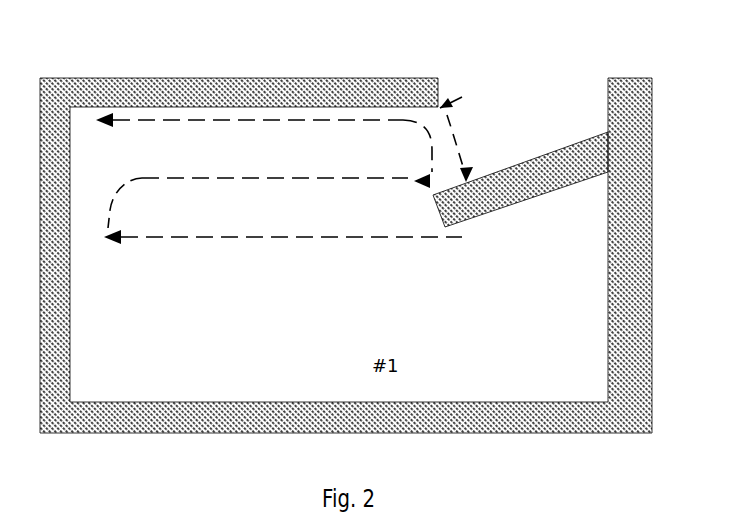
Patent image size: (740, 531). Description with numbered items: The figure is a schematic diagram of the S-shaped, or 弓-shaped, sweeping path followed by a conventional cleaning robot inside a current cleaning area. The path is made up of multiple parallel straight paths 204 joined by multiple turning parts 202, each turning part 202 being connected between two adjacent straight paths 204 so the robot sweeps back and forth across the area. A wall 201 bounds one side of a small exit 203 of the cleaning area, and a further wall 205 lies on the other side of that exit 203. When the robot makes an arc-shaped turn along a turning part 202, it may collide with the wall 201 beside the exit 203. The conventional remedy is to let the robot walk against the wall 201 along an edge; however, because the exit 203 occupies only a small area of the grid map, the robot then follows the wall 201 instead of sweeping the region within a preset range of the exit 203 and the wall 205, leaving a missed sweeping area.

The wall 201 is at (327, 79).
The turning part 202 is at (118, 195).
The exit 203 is at (455, 143).
The straight path 204 is at (372, 121).
The wall 205 is at (545, 173).